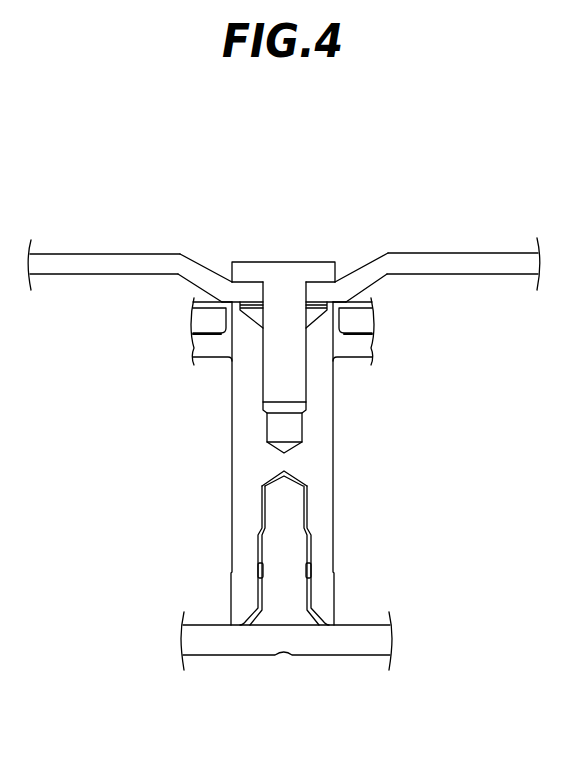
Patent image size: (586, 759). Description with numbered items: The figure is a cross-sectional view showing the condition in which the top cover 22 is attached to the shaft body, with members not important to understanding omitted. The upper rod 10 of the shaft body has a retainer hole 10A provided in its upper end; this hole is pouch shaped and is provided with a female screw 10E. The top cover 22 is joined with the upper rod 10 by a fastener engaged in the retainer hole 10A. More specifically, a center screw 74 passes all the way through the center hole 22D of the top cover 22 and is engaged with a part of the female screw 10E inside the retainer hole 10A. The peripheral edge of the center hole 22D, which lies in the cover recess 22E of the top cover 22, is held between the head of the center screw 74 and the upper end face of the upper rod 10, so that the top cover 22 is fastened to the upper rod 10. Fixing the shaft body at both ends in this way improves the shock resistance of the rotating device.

The top cover 22 is at (465, 262).
The cover recess 22E is at (208, 267).
The center hole 22D is at (263, 298).
The center screw 74 is at (323, 268).
The upper rod 10 is at (240, 468).
The retainer hole 10A is at (263, 383).
The female screw 10E is at (250, 420).